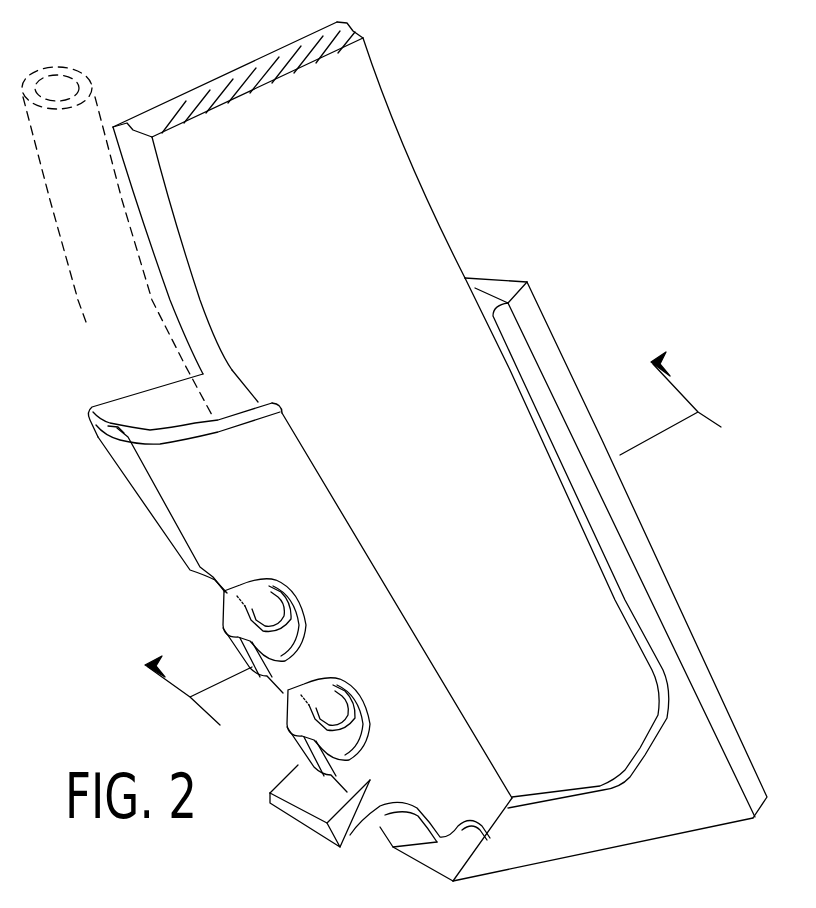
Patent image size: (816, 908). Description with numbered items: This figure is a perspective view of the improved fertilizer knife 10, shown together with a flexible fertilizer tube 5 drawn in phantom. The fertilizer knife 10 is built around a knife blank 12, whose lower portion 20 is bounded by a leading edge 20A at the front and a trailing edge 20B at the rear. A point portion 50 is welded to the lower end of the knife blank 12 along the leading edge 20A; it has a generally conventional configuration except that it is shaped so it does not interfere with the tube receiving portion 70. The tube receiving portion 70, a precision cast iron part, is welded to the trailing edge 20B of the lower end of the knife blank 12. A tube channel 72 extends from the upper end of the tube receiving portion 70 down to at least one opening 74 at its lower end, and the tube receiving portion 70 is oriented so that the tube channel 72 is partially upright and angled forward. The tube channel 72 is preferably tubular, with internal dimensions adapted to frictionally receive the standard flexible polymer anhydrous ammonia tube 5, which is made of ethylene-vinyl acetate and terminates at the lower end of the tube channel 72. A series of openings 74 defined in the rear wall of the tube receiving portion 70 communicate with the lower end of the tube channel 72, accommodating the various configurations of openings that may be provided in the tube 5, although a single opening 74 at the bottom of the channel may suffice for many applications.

The fertilizer knife 10 is at (478, 78).
The knife blank 12 is at (311, 234).
The lower portion 20 is at (557, 680).
The leading edge 20A is at (463, 268).
The trailing edge 20B is at (233, 402).
The point portion 50 is at (707, 788).
The tube receiving portion 70 is at (258, 625).
The tube channel 72 is at (162, 418).
The opening 74 is at (223, 618).
The fertilizer implement tube 5 is at (84, 322).